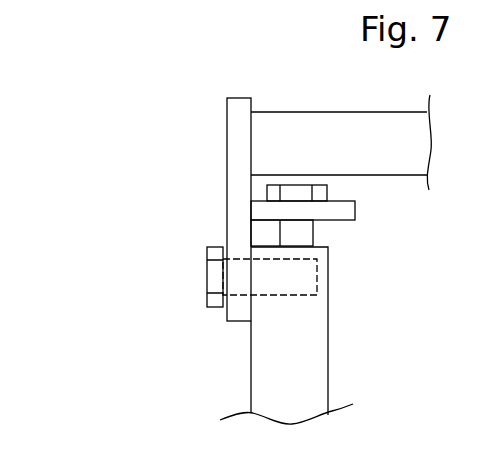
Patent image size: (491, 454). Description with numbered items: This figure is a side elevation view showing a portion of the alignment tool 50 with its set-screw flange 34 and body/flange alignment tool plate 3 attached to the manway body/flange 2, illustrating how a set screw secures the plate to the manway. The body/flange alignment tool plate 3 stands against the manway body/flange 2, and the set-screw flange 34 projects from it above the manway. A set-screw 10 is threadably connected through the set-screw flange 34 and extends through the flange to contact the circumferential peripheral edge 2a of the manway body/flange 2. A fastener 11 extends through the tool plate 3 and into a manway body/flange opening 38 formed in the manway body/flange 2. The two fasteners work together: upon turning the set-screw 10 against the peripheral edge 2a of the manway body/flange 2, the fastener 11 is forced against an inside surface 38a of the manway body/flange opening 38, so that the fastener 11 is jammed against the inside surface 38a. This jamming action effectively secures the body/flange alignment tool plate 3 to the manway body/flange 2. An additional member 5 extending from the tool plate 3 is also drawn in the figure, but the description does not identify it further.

The alignment tool 50 is at (108, 150).
The body/flange alignment tool plate 3 is at (237, 147).
The beam 5 is at (296, 127).
The set-screw 10 is at (317, 195).
The set-screw flange 34 is at (343, 210).
The circumferential peripheral edge 2a is at (322, 243).
The inside surface 38a is at (320, 262).
The manway body/flange 2 is at (315, 390).
The fastener 11 is at (210, 282).
The manway body/flange opening 38 is at (278, 296).